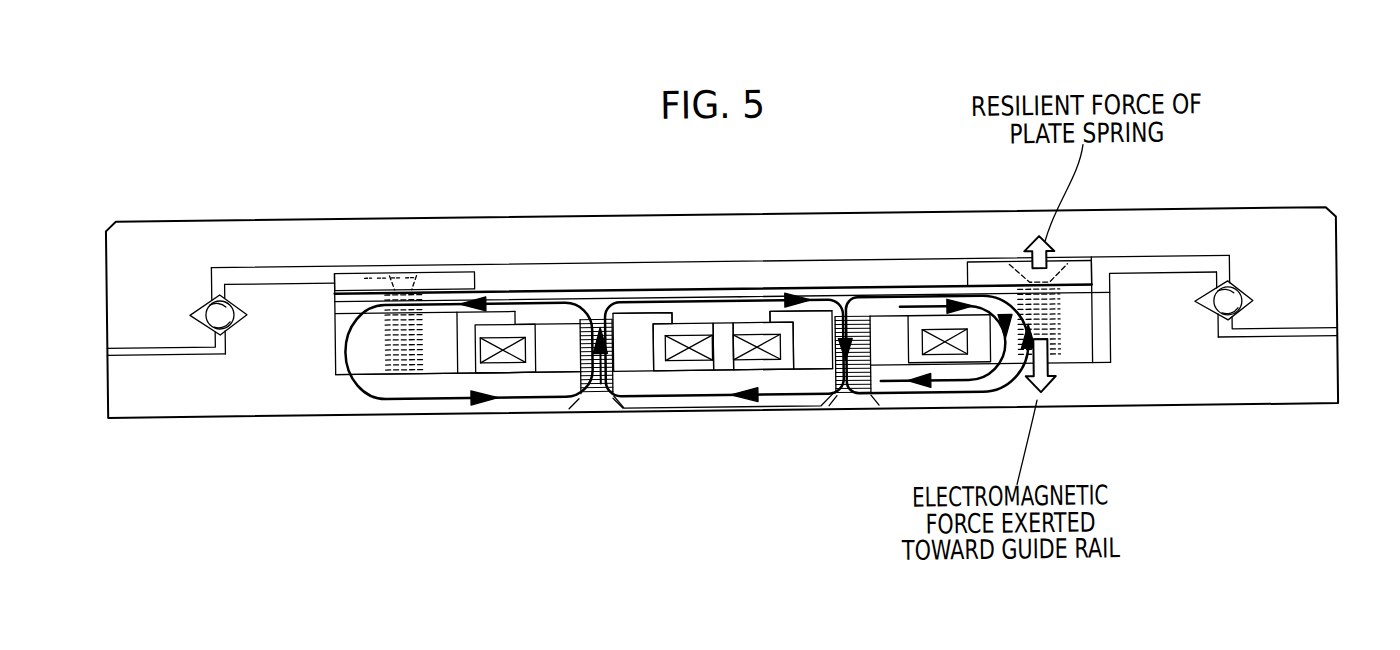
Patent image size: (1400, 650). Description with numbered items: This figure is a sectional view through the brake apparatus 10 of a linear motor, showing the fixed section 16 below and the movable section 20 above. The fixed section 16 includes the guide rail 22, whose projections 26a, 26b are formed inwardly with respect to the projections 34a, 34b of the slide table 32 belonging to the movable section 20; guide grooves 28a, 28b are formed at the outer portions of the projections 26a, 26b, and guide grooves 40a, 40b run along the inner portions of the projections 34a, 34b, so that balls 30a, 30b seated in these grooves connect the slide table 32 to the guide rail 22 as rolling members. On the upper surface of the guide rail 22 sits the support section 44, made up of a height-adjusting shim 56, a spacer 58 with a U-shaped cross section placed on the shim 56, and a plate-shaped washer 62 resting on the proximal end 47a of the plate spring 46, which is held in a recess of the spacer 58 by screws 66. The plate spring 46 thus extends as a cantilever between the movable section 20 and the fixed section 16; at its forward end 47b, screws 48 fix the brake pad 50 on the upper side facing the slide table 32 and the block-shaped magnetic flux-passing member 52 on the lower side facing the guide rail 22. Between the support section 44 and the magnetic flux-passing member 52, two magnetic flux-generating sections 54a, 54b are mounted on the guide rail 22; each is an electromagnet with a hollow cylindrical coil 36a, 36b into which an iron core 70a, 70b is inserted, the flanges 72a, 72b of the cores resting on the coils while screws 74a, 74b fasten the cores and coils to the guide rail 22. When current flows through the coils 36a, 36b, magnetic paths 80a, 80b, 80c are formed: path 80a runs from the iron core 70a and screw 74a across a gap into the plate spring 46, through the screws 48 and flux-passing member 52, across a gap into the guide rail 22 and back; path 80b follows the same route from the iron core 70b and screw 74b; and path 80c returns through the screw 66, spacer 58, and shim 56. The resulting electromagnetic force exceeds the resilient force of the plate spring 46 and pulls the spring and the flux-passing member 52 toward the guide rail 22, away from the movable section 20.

The brake apparatus 10 is at (590, 285).
The fixed section 16 is at (683, 422).
The movable section 20 is at (705, 214).
The guide rail 22 is at (668, 391).
The projection 26a is at (275, 340).
The projection 26b is at (1168, 330).
The guide groove 28a is at (226, 290).
The guide groove 28b is at (1223, 288).
The ball 30a is at (212, 293).
The ball 30b is at (1240, 288).
The slide table 32 is at (443, 244).
The projection 34a is at (138, 315).
The projection 34b is at (1305, 317).
The coil 36a is at (512, 374).
The coil 36b is at (930, 366).
The guide groove 40a is at (218, 342).
The guide groove 40b is at (1225, 346).
The support section 44 is at (341, 258).
The plate spring 46 is at (866, 320).
The proximal end 47a is at (345, 296).
The forward end 47b is at (1085, 303).
The screw 48 is at (1027, 262).
The brake pad 50 is at (1080, 271).
The magnetic flux-passing member 52 is at (1077, 344).
The magnetic flux-generating section 54a is at (559, 388).
The magnetic flux-generating section 54b is at (815, 387).
The height-adjusting shim 56 is at (425, 356).
The spacer 58 is at (353, 346).
The washer 62 is at (353, 276).
The screw 66 is at (418, 273).
The iron core 70a is at (633, 343).
The iron core 70b is at (808, 341).
The flange 72a is at (516, 324).
The flange 72b is at (920, 320).
The screw 74a is at (595, 398).
The screw 74b is at (866, 402).
The magnetic path 80a is at (722, 408).
The magnetic path 80b is at (890, 408).
The magnetic path 80c is at (452, 411).